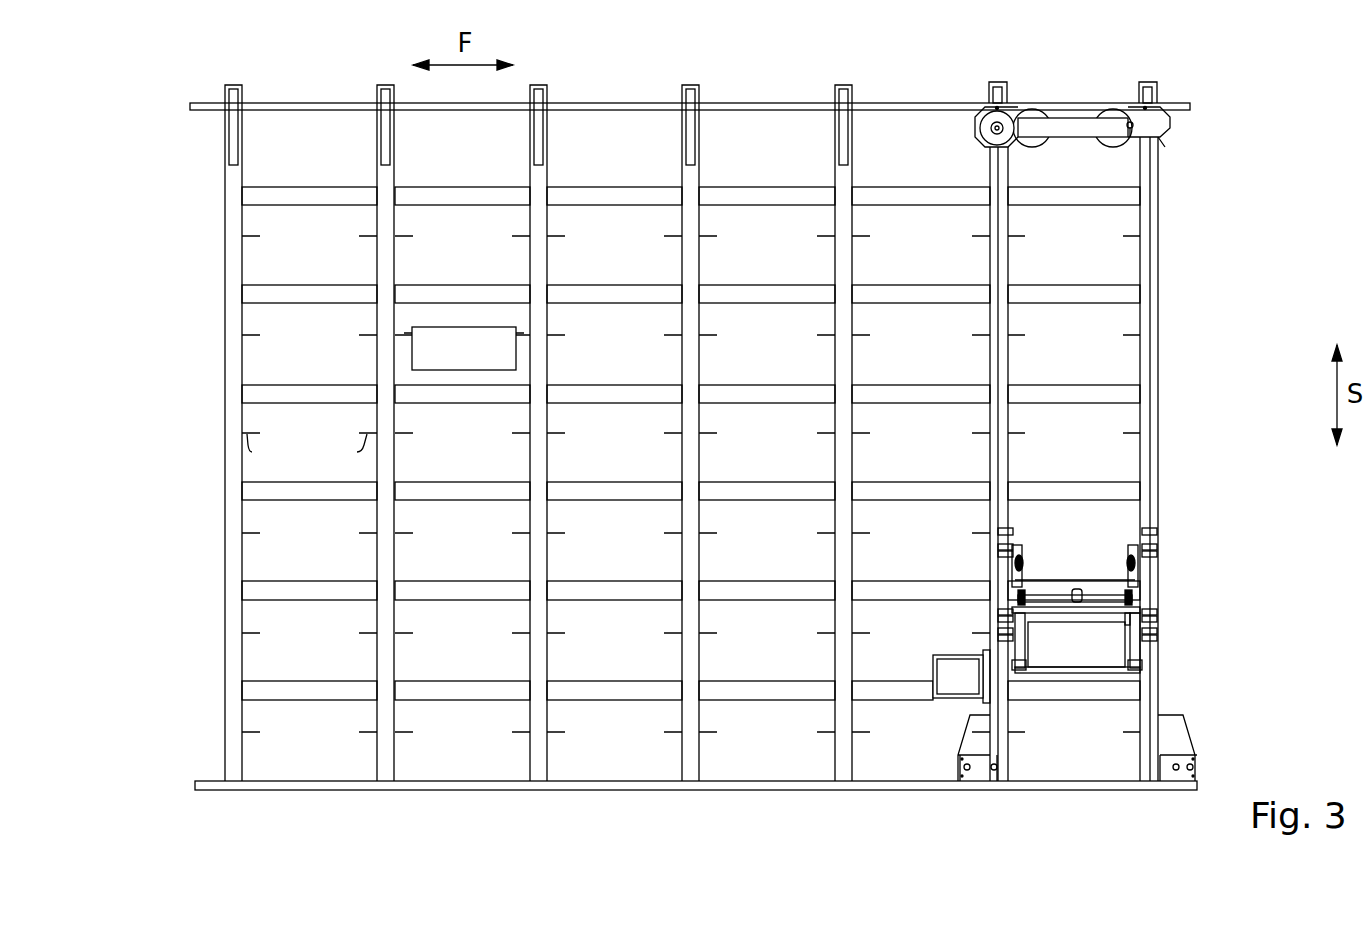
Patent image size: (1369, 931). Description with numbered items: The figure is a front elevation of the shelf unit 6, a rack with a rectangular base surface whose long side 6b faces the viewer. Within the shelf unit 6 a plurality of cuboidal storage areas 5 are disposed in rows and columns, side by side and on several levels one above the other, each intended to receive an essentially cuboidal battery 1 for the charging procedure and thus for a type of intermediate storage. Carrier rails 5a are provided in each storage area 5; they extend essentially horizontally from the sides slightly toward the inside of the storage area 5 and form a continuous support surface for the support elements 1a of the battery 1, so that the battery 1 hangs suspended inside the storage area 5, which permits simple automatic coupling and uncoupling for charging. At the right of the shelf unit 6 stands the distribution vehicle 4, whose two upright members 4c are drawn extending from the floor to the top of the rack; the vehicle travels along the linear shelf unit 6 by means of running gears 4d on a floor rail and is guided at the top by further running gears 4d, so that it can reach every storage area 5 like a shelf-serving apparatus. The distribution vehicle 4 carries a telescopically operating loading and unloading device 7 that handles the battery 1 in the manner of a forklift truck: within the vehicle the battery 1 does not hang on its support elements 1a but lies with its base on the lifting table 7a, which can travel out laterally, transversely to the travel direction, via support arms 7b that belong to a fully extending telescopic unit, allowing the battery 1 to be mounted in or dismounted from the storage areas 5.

The battery 1 is at (433, 344).
The support element 1a is at (1133, 620).
The distribution vehicle 4 is at (1175, 182).
The lift masts 4c is at (1145, 258).
The running gear 4d is at (1140, 118).
The storage area 5 is at (1065, 363).
The carrier rail 5a is at (357, 452).
The shelf unit 6 is at (205, 172).
The long side 6b is at (240, 558).
The loading and unloading device 7 is at (1179, 608).
The lifting table 7a is at (1090, 664).
The support arm 7b is at (1138, 663).